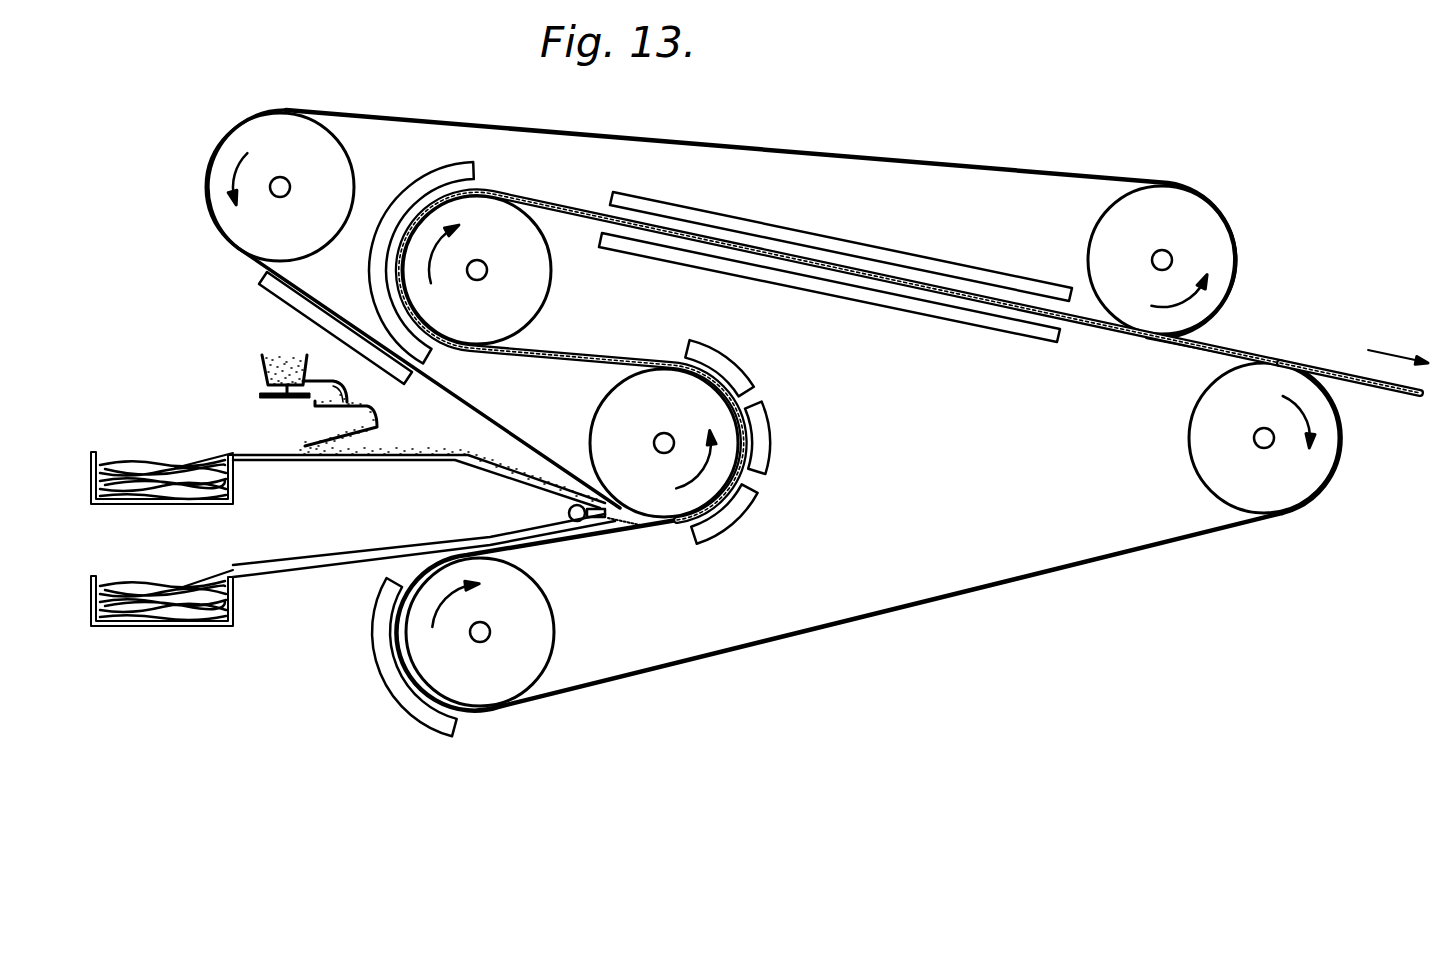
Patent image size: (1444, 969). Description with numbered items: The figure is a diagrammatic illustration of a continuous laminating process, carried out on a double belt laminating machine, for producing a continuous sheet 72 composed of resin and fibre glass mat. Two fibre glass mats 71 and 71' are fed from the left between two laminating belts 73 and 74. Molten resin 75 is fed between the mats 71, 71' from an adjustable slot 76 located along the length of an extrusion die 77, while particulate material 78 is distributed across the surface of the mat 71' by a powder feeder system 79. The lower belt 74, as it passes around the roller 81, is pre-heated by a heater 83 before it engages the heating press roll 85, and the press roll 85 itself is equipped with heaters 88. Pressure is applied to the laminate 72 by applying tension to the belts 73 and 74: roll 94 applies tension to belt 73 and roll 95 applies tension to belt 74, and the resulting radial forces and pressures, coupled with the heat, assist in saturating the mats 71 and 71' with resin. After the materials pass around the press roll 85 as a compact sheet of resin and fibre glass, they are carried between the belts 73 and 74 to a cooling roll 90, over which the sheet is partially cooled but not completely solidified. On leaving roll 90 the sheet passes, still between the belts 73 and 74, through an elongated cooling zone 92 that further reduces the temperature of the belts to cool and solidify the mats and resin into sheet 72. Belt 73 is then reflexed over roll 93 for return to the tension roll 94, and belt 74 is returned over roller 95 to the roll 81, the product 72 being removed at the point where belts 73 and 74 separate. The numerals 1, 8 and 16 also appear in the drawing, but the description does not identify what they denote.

The arcuate shield around roller 90 1 is at (432, 175).
The fibrous material layer 8 is at (412, 450).
The guide plate 16 is at (282, 302).
The fibre glass mat 71 is at (353, 570).
The fibre glass mat 71' is at (348, 453).
The continuous sheet 72 is at (1297, 364).
The laminating belt 73 is at (806, 153).
The laminating belt 74 is at (722, 652).
The molten resin 75 is at (623, 522).
The adjustable slot 76 is at (593, 518).
The extrusion die 77 is at (568, 513).
The particulate material 78 is at (287, 357).
The powder feeder system 79 is at (265, 372).
The roller 81 is at (467, 681).
The heater 83 is at (397, 700).
The heating press roll 85 is at (638, 424).
The heaters 88 is at (733, 362).
The cooling roll 90 is at (503, 286).
The elongated cooling zone 92 is at (888, 297).
The roll 93 is at (1143, 231).
The tension roll 94 is at (318, 229).
The roll 95 is at (1247, 491).